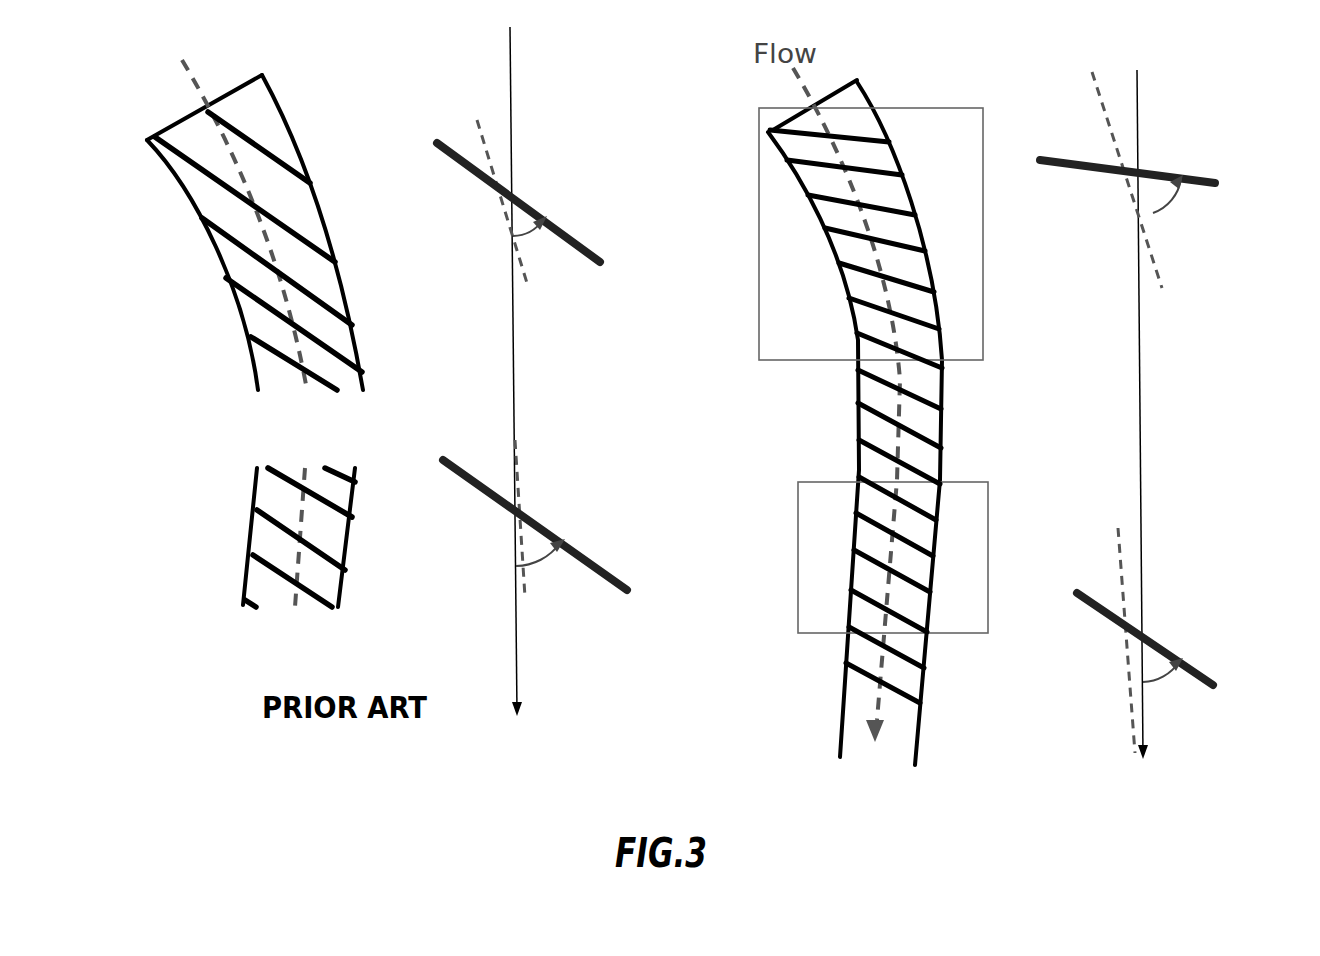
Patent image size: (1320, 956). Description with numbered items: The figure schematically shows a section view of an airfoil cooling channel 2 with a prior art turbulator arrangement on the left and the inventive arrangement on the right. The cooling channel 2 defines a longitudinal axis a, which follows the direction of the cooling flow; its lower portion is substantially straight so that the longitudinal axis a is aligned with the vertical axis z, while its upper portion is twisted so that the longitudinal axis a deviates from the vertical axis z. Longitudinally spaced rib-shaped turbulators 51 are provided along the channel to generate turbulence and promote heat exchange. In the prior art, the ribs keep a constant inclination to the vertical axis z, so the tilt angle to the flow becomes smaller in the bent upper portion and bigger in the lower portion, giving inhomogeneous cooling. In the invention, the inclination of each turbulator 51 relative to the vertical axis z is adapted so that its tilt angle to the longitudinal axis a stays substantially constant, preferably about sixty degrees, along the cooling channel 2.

The cooling channel 2 is at (806, 101).
The turbulator 51 is at (885, 203).
The longitudinal axis a is at (802, 412).
The vertical axis z is at (847, 393).